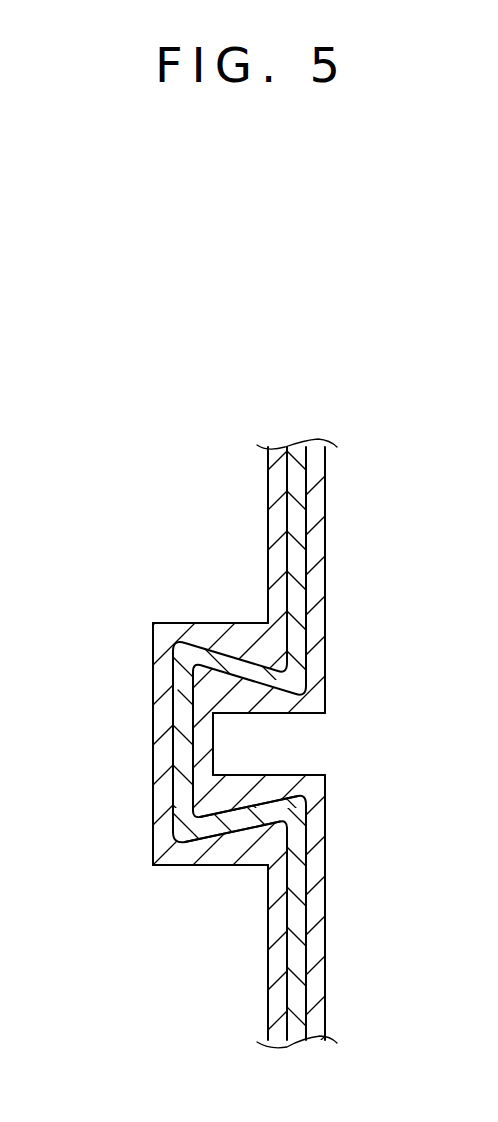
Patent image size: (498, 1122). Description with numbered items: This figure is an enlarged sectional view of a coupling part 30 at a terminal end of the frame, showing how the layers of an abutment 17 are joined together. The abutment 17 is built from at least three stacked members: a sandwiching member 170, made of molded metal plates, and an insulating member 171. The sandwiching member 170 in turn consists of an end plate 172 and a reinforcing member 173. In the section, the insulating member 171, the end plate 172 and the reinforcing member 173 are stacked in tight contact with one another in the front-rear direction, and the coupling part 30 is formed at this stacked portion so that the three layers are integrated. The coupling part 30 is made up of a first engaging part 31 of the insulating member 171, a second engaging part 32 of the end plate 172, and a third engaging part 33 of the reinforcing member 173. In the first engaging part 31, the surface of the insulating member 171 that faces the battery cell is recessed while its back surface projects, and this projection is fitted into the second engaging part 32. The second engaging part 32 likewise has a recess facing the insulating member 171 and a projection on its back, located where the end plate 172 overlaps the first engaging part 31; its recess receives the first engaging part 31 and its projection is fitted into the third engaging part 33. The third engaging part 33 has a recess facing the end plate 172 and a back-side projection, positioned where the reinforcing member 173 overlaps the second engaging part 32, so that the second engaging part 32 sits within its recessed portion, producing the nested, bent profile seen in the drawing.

The abutment 17 is at (363, 303).
The sandwiching member 170 is at (310, 343).
The insulating member 171 is at (315, 440).
The end plate 172 is at (297, 452).
The reinforcing member 173 is at (277, 453).
The coupling part 30 is at (142, 580).
The first engaging part 31 is at (240, 818).
The second engaging part 32 is at (173, 794).
The third engaging part 33 is at (172, 733).